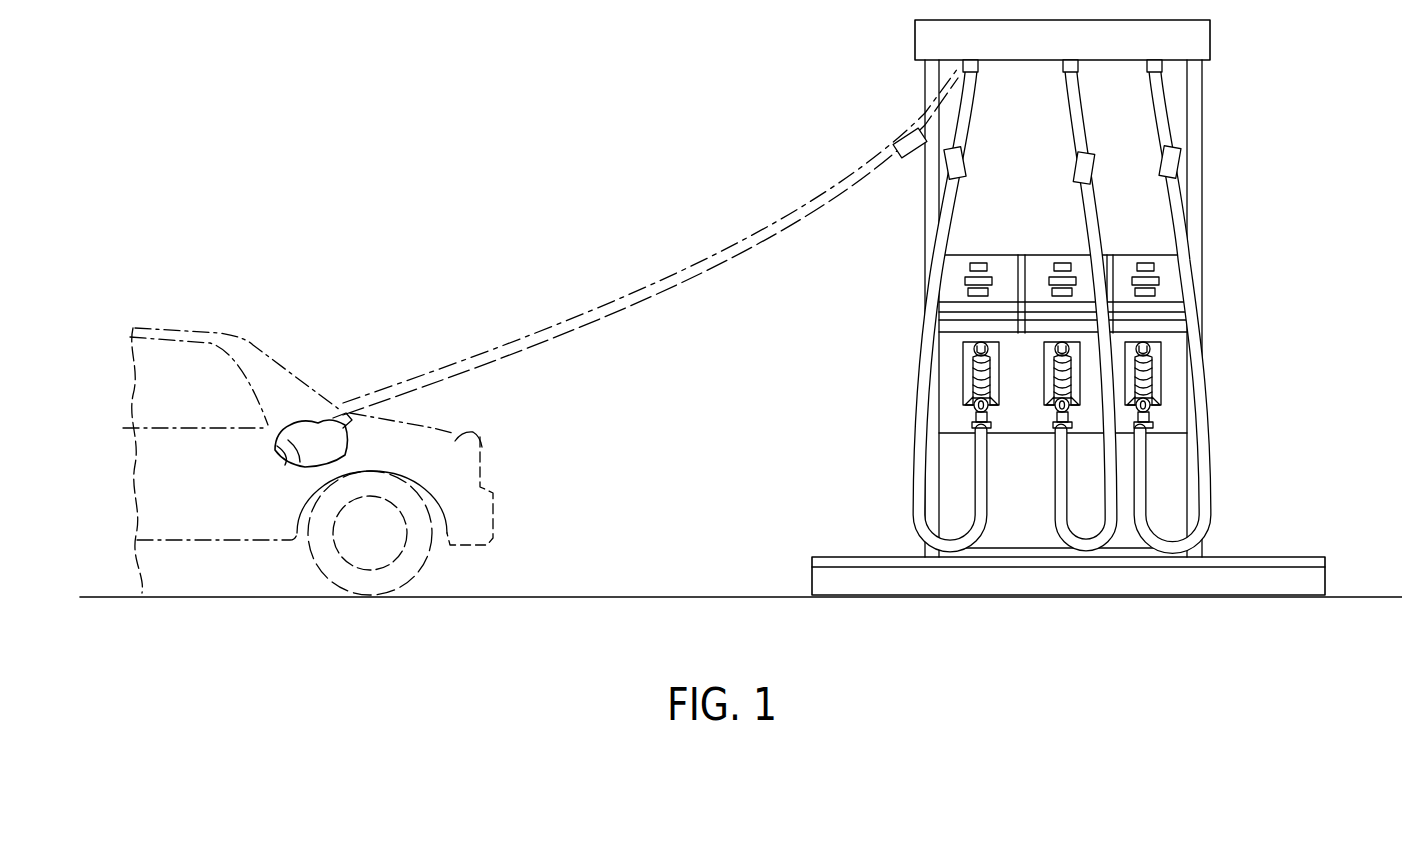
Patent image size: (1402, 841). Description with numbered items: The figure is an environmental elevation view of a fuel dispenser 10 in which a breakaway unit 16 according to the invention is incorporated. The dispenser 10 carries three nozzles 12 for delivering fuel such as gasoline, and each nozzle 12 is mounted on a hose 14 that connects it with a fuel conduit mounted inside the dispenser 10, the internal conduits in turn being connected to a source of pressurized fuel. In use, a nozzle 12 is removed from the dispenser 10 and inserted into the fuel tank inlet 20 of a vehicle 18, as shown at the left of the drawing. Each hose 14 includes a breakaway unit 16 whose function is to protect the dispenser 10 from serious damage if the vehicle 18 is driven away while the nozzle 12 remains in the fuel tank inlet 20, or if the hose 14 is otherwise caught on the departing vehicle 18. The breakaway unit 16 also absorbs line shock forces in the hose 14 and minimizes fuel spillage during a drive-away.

The fuel dispenser 10 is at (1236, 210).
The nozzle 12 is at (1160, 375).
The hose 14 is at (947, 217).
The breakaway unit 16 is at (1073, 163).
The vehicle 18 is at (463, 433).
The fuel tank inlet 20 is at (285, 437).